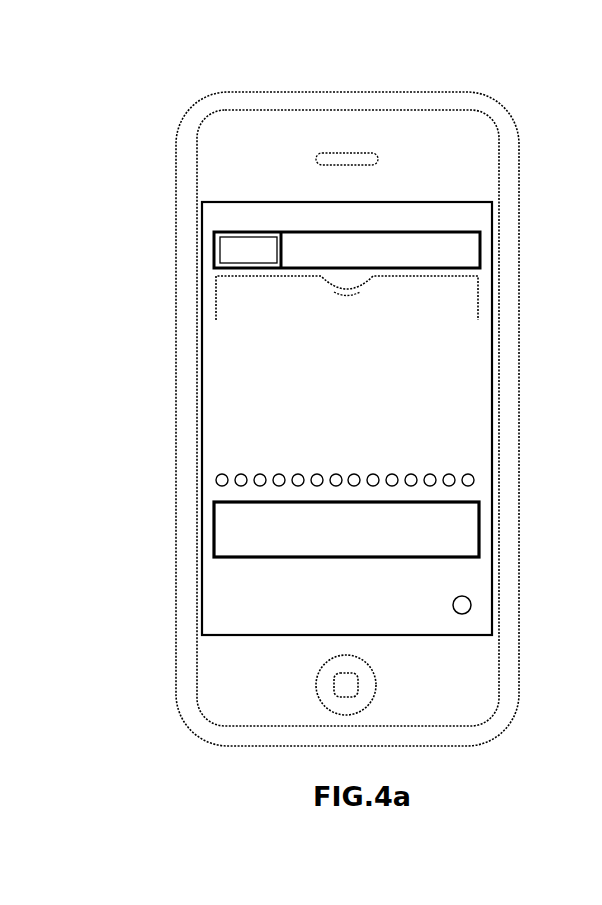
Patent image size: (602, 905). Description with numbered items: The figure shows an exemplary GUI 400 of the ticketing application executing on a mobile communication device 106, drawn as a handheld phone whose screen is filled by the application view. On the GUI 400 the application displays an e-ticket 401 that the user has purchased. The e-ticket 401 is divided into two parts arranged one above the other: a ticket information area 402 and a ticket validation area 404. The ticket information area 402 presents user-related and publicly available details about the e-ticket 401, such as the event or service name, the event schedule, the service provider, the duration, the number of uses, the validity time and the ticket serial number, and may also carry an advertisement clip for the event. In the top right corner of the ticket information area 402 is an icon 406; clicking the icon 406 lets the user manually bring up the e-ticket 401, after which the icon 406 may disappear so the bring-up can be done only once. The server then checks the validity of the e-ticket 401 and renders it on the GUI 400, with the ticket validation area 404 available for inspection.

The mobile communication device 106 is at (317, 92).
The GUI 400 is at (213, 178).
The e-ticket 401 is at (207, 223).
The icon 406 is at (480, 222).
The ticket information area 402 is at (223, 447).
The ticket validation area 404 is at (233, 543).